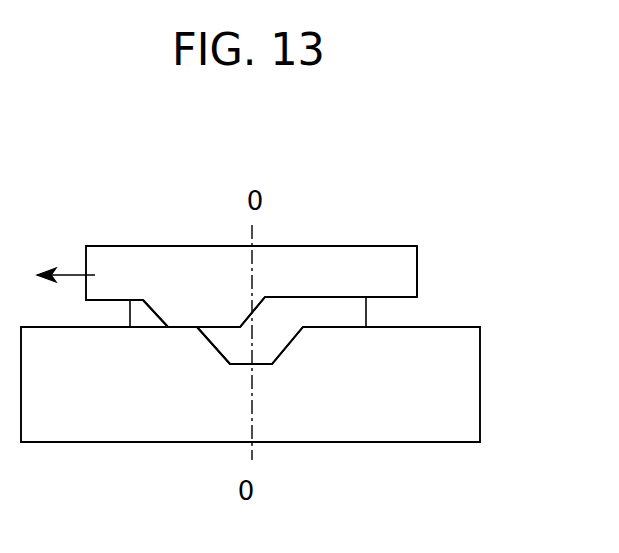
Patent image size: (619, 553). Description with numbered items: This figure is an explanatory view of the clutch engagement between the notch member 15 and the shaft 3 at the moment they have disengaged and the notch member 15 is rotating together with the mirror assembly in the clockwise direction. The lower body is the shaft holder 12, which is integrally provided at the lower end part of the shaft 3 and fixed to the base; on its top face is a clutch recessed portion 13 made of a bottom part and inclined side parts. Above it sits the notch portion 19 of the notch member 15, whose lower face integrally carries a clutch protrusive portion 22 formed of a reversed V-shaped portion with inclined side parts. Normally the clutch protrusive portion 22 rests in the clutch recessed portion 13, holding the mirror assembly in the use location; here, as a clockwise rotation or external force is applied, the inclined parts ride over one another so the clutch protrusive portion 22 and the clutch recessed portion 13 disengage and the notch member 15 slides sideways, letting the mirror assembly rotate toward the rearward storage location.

The notch member 15 is at (392, 232).
The notch portion 19 is at (402, 270).
The clutch protrusive portion 22 is at (192, 307).
The shaft 3 is at (302, 359).
The shaft holder 12 is at (475, 390).
The clutch recessed portion 13 is at (287, 347).